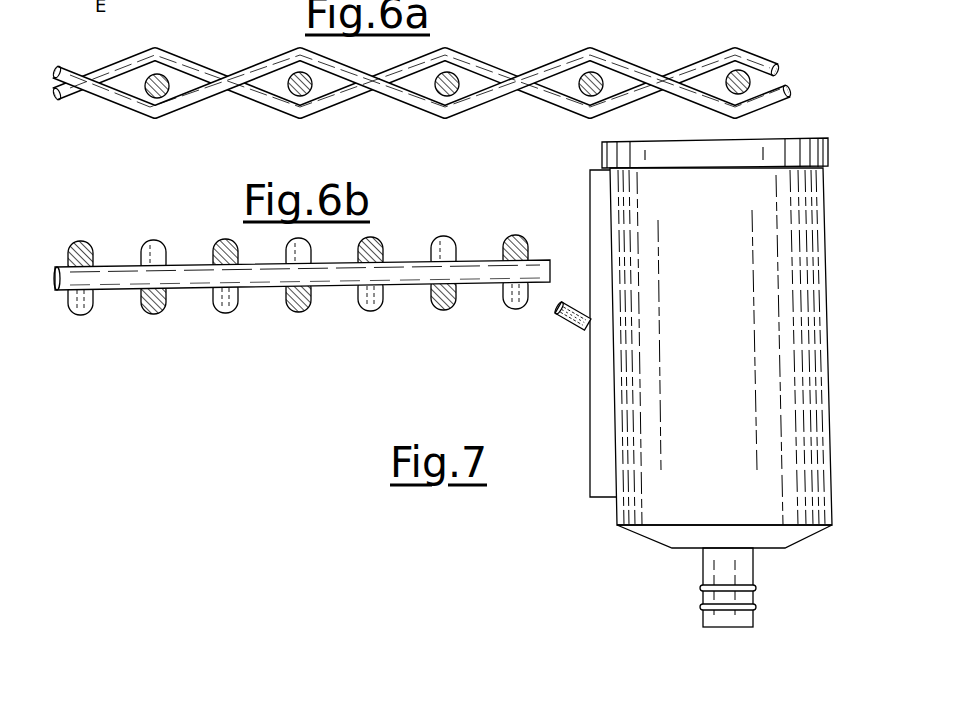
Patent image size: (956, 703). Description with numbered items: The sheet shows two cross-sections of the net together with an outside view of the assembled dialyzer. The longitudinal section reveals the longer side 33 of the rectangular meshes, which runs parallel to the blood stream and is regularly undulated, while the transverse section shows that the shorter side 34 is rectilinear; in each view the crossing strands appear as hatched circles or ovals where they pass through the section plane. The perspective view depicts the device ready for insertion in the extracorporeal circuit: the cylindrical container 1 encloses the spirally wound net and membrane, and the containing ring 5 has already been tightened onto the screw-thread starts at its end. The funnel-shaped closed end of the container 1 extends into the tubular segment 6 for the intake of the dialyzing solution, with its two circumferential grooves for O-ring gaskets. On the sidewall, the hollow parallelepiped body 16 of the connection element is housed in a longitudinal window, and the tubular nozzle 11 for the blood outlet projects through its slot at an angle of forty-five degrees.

In FIG. 7, the cylindrical container 1 is at (807, 330).
In FIG. 7, the containing ring 5 is at (803, 143).
In FIG. 7, the tubular segment 6 is at (712, 567).
In FIG. 7, the tubular nozzle 11 is at (577, 335).
In FIG. 7, the hollow parallelepiped body 16 is at (600, 390).
In FIG. 6A, the longer side 33 is at (245, 98).
In FIG. 6B, the longer side 33 is at (78, 313).
In FIG. 6A, the shorter side 34 is at (176, 77).
In FIG. 6B, the shorter side 34 is at (195, 280).